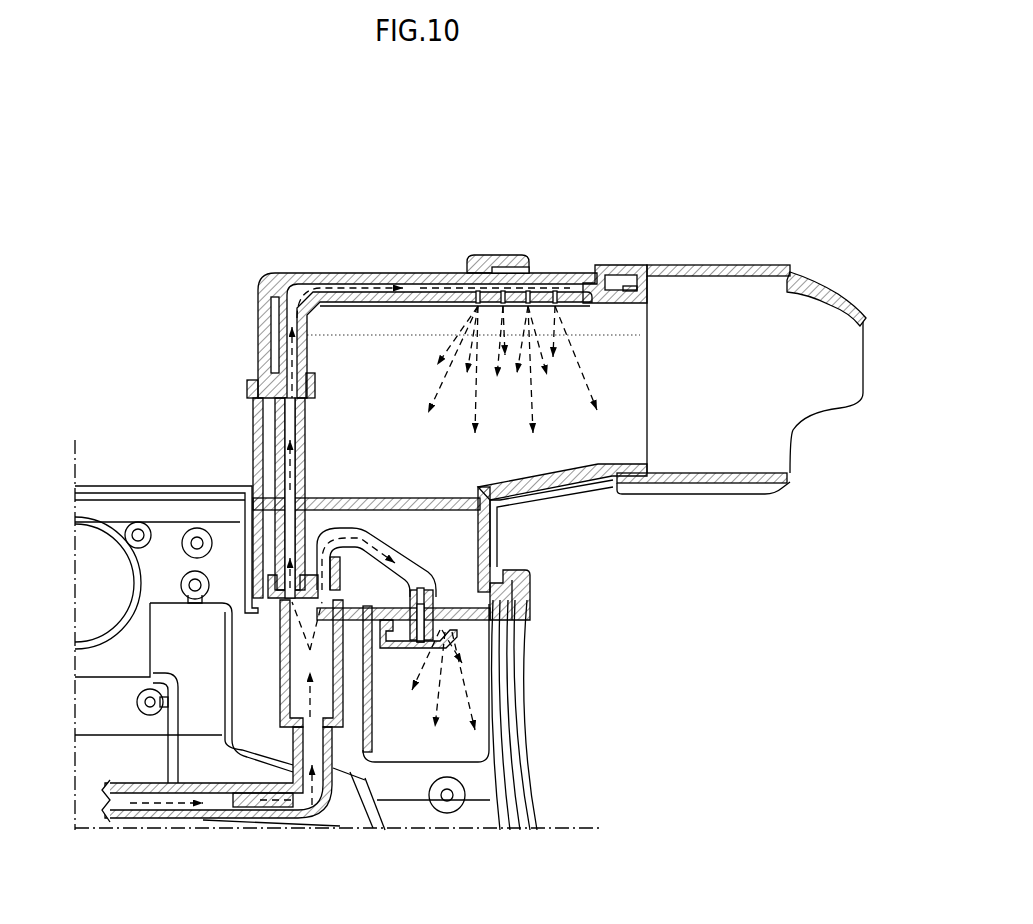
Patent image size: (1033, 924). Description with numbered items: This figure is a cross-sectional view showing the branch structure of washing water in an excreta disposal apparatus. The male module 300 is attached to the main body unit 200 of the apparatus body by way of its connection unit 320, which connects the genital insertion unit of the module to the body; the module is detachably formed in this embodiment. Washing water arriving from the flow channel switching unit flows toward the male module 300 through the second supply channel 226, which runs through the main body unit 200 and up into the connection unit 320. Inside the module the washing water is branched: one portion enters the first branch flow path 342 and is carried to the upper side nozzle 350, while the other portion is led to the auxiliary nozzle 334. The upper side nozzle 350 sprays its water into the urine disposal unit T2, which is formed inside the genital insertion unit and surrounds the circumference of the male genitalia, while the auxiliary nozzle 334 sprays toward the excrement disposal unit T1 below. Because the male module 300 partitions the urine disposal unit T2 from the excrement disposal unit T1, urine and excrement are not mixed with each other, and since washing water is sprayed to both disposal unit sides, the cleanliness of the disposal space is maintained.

The main body unit 200 is at (128, 470).
The second supply channel 226 is at (203, 787).
The male module 300 is at (287, 233).
The connection unit 320 is at (280, 445).
The auxiliary nozzle 334 is at (445, 628).
The first branch flow path 342 is at (392, 558).
The upper side nozzle 350 is at (530, 300).
The excrement disposal unit T1 is at (452, 737).
The urine disposal unit T2 is at (573, 443).